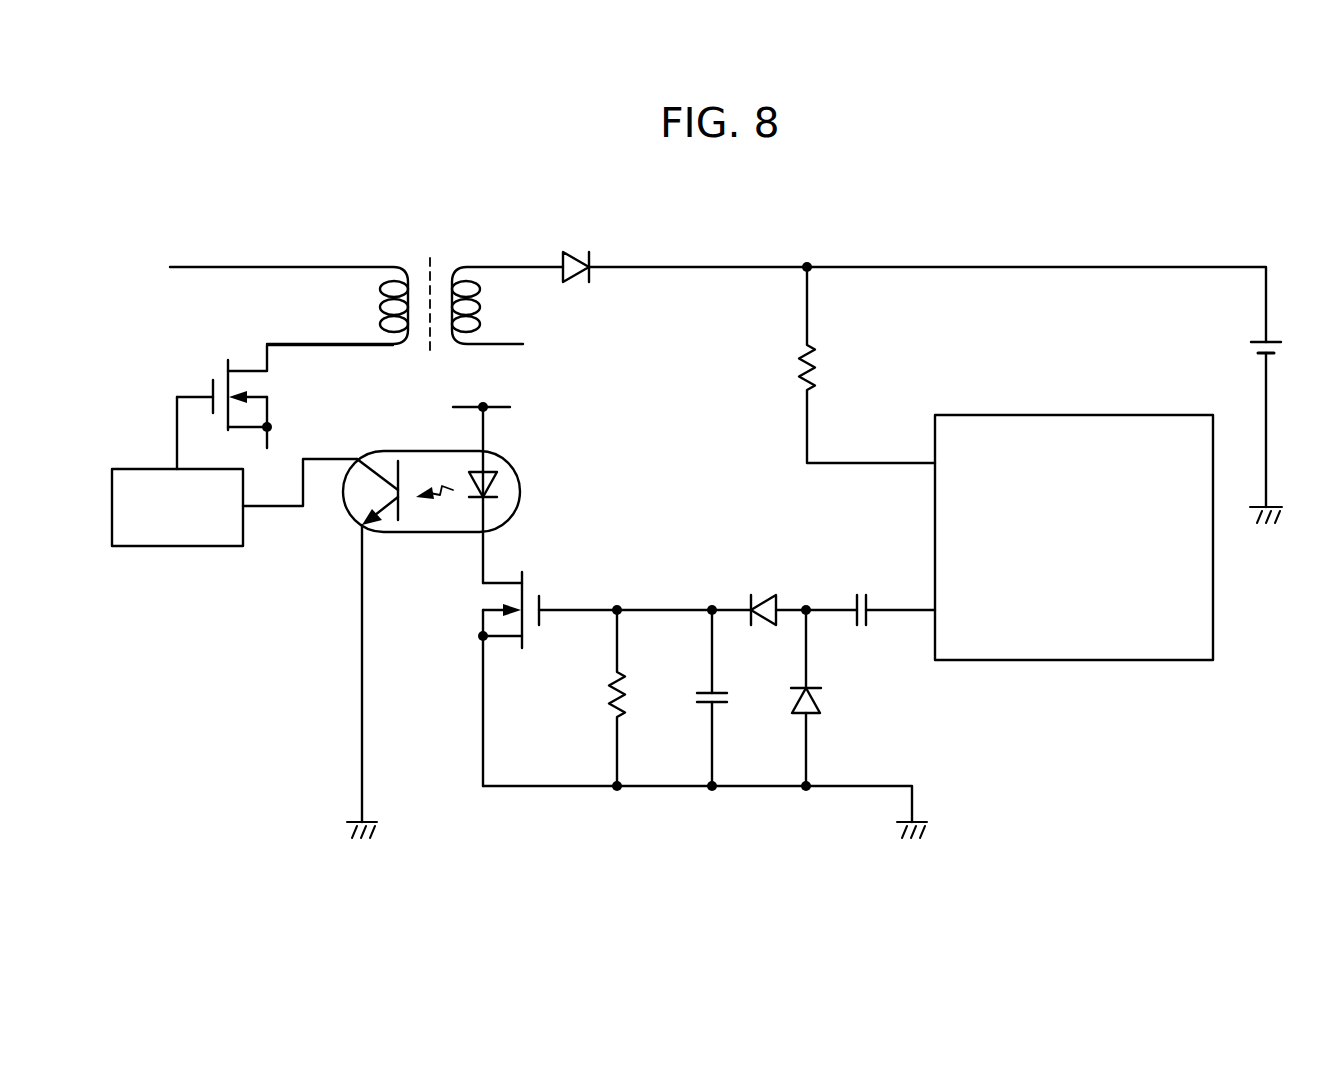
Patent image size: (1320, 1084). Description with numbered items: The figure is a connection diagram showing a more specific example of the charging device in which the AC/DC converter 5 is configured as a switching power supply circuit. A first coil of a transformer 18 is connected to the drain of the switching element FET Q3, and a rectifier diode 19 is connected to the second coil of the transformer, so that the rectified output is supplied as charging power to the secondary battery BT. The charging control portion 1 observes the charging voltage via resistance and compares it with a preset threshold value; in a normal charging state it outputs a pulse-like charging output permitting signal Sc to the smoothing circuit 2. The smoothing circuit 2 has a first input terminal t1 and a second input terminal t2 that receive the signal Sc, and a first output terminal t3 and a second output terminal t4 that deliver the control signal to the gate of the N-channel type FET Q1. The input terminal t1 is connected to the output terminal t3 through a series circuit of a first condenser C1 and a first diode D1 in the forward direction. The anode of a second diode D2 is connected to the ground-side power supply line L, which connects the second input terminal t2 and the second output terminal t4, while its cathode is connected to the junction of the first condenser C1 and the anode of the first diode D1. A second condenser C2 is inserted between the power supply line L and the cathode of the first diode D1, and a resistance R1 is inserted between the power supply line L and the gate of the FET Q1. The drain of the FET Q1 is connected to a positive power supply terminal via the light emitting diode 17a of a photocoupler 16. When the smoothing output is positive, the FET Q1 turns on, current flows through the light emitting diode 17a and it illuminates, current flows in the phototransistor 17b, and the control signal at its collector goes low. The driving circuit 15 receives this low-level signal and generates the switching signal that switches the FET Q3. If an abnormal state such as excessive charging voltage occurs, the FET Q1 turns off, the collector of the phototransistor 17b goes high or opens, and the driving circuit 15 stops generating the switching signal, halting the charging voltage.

The AC/DC converter 5 is at (808, 185).
The transformer 18 is at (430, 280).
The rectifier diode 19 is at (576, 262).
The switching element FET Q3 is at (221, 370).
The driving circuit 15 is at (148, 548).
The photocoupler 16 is at (453, 613).
The light emitting diode 17a is at (503, 487).
The phototransistor 17b is at (358, 503).
The N-channel type FET Q1 is at (533, 582).
The smoothing circuit 2 is at (696, 545).
The first output terminal t3 is at (588, 608).
The resistance R1 is at (625, 703).
The second condenser C2 is at (730, 698).
The first diode D1 is at (762, 597).
The second diode D2 is at (818, 700).
The first condenser C1 is at (862, 593).
The first input terminal t1 is at (903, 608).
The charging output permitting signal Sc is at (906, 612).
The second output terminal t4 is at (518, 788).
The power supply line L is at (582, 788).
The second input terminal t2 is at (838, 788).
The charging control portion 1 is at (1027, 414).
The secondary battery BT is at (1250, 348).